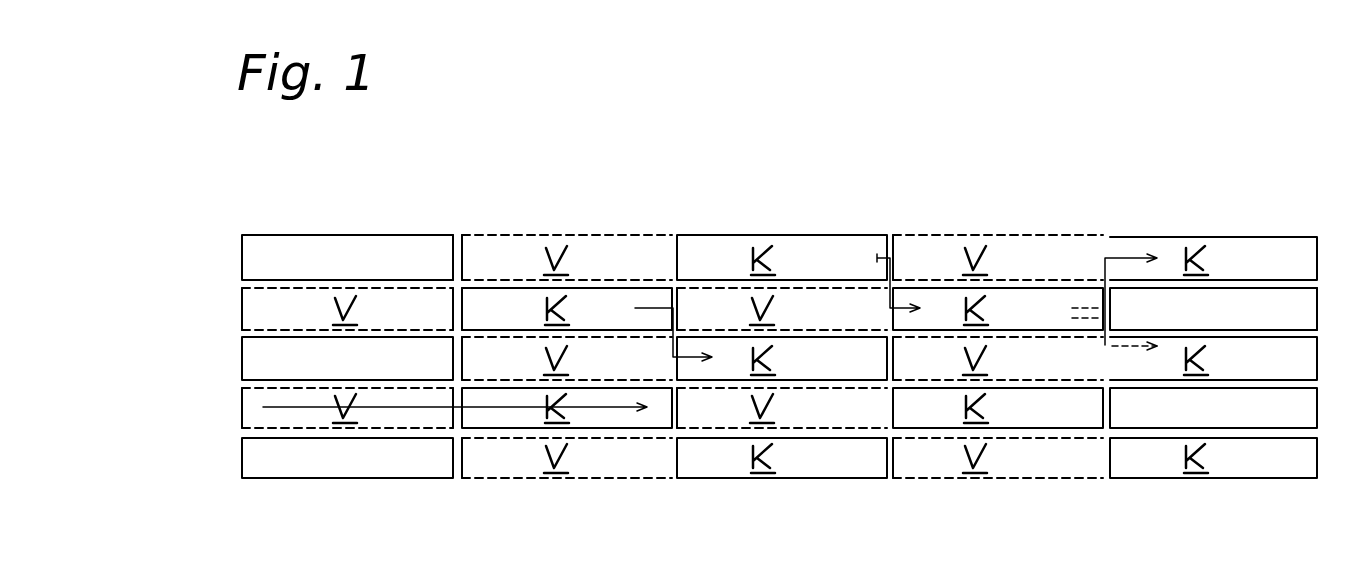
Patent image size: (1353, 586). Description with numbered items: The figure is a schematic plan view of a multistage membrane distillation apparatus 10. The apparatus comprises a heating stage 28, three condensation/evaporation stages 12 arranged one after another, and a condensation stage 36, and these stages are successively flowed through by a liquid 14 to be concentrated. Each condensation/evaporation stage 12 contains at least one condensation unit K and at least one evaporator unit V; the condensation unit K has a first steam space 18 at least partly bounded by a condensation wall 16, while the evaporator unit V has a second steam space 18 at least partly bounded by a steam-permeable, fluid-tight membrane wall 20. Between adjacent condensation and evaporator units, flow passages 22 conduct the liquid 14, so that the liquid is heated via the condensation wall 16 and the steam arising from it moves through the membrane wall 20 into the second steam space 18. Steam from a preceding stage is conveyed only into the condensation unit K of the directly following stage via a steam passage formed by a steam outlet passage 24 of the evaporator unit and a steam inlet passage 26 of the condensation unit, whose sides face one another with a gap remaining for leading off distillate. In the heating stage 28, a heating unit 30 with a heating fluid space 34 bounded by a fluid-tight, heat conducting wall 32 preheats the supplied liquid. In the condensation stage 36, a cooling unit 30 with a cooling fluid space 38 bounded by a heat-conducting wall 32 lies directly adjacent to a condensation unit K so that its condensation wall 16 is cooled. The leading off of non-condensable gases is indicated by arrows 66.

The multistage membrane distillation apparatus 10 is at (725, 84).
The condensation/evaporation stage 12 is at (553, 507).
The liquid to be concentrated 14 is at (295, 334).
The condensation wall 16 is at (632, 288).
The steam space 18 is at (592, 247).
The membrane wall 20 is at (612, 233).
The flow passage 22 is at (255, 285).
The steam outlet passage 24 is at (670, 258).
The steam inlet passage 26 is at (457, 303).
The heating stage 28 is at (344, 510).
The heating unit / cooling unit 30 is at (372, 276).
The fluid-tight, heat conducting wall 32 is at (408, 235).
The heating fluid space 34 is at (293, 245).
The condensation stage 36 is at (1205, 509).
The cooling fluid space 38 is at (1257, 310).
The arrows 66 is at (1122, 256).